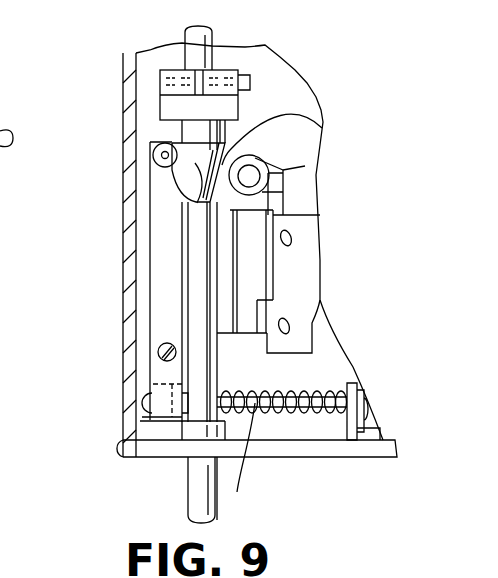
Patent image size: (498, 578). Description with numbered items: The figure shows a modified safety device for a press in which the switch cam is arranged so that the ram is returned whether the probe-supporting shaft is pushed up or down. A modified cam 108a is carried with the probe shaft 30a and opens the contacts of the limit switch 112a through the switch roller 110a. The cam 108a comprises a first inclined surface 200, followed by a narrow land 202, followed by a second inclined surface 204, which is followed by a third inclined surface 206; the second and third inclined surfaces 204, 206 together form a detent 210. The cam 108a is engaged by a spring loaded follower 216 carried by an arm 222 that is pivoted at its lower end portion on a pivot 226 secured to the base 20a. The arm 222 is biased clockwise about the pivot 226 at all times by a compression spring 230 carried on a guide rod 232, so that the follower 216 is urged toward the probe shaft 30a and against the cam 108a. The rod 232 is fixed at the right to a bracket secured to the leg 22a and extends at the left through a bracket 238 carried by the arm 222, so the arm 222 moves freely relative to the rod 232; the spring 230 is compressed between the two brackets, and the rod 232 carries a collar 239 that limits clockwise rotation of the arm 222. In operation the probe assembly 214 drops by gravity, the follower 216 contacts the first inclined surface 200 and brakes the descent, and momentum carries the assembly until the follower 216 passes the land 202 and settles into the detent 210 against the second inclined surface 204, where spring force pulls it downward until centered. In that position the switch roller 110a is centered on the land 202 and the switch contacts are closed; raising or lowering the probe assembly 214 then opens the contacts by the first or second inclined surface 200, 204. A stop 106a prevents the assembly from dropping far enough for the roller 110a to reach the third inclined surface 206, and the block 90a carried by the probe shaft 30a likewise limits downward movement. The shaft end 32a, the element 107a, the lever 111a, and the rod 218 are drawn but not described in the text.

The base 20a is at (327, 330).
The leg 22a is at (272, 462).
The probe shaft 30a is at (207, 371).
The guide block 32a is at (196, 432).
The block 90a is at (240, 102).
The stop 106a is at (320, 288).
The latch block 107a is at (314, 248).
The cam 108a is at (284, 180).
The switch roller 110a is at (250, 142).
The lever 111a is at (305, 166).
The limit switch 112a is at (313, 232).
The first inclined surface 200 is at (183, 176).
The narrow land 202 is at (172, 182).
The second inclined surface 204 is at (190, 210).
The third inclined surface 206 is at (185, 148).
The detent 210 is at (321, 128).
The probe assembly 214 is at (188, 502).
The follower 216 is at (152, 155).
The rod 218 is at (188, 277).
The arm 222 is at (160, 305).
The pivot 226 is at (158, 346).
The compression spring 230 is at (250, 392).
The guide rod 232 is at (252, 463).
The bracket 238 is at (153, 384).
The collar 239 is at (142, 418).